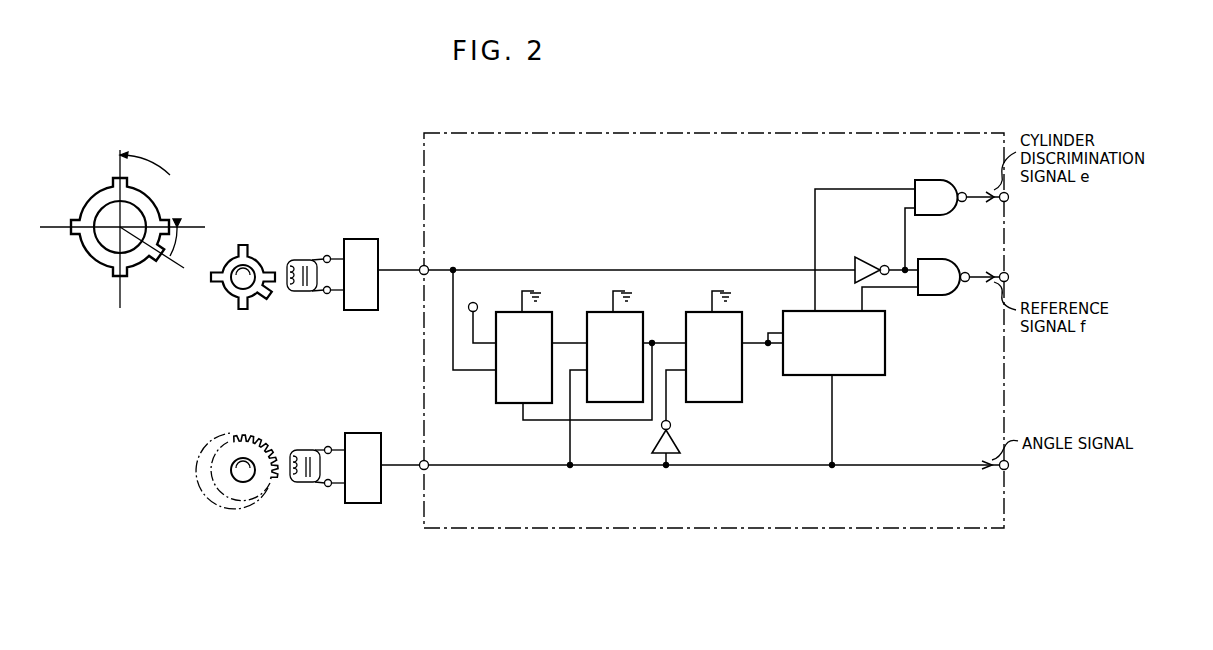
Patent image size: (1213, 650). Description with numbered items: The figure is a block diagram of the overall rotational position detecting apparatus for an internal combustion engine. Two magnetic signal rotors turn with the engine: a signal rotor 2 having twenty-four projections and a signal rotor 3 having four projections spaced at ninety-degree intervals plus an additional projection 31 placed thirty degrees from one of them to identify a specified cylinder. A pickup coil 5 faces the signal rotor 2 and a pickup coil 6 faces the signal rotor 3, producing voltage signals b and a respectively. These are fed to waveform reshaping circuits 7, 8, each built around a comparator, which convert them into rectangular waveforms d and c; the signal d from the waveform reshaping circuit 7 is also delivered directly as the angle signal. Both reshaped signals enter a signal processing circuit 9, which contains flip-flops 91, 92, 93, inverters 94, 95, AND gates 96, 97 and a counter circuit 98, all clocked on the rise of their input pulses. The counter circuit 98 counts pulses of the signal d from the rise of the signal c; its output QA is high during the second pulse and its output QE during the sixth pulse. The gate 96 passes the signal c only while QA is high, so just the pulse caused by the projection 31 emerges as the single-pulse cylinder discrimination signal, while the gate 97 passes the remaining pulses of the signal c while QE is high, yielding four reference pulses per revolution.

The signal rotor 2 is at (258, 490).
The signal rotor 3 is at (146, 220).
The projection 31 is at (150, 276).
The pickup coil 5 is at (300, 485).
The pickup coil 6 is at (294, 262).
The waveform reshaping circuit 7 is at (366, 502).
The waveform reshaping circuit 8 is at (366, 325).
The signal processing circuit 9 is at (758, 133).
The flip-flop 91 is at (550, 318).
The flip-flop 92 is at (641, 318).
The flip-flop 93 is at (739, 318).
The inverter 94 is at (680, 445).
The inverter 95 is at (866, 256).
The AND gate 96 is at (942, 181).
The AND gate 97 is at (948, 259).
The counter circuit 98 is at (886, 357).
The output signal of pickup coil 6 a is at (315, 256).
The output signal of pickup coil 5 b is at (316, 446).
The reshaped signal c is at (402, 262).
The reshaped signal d is at (404, 458).